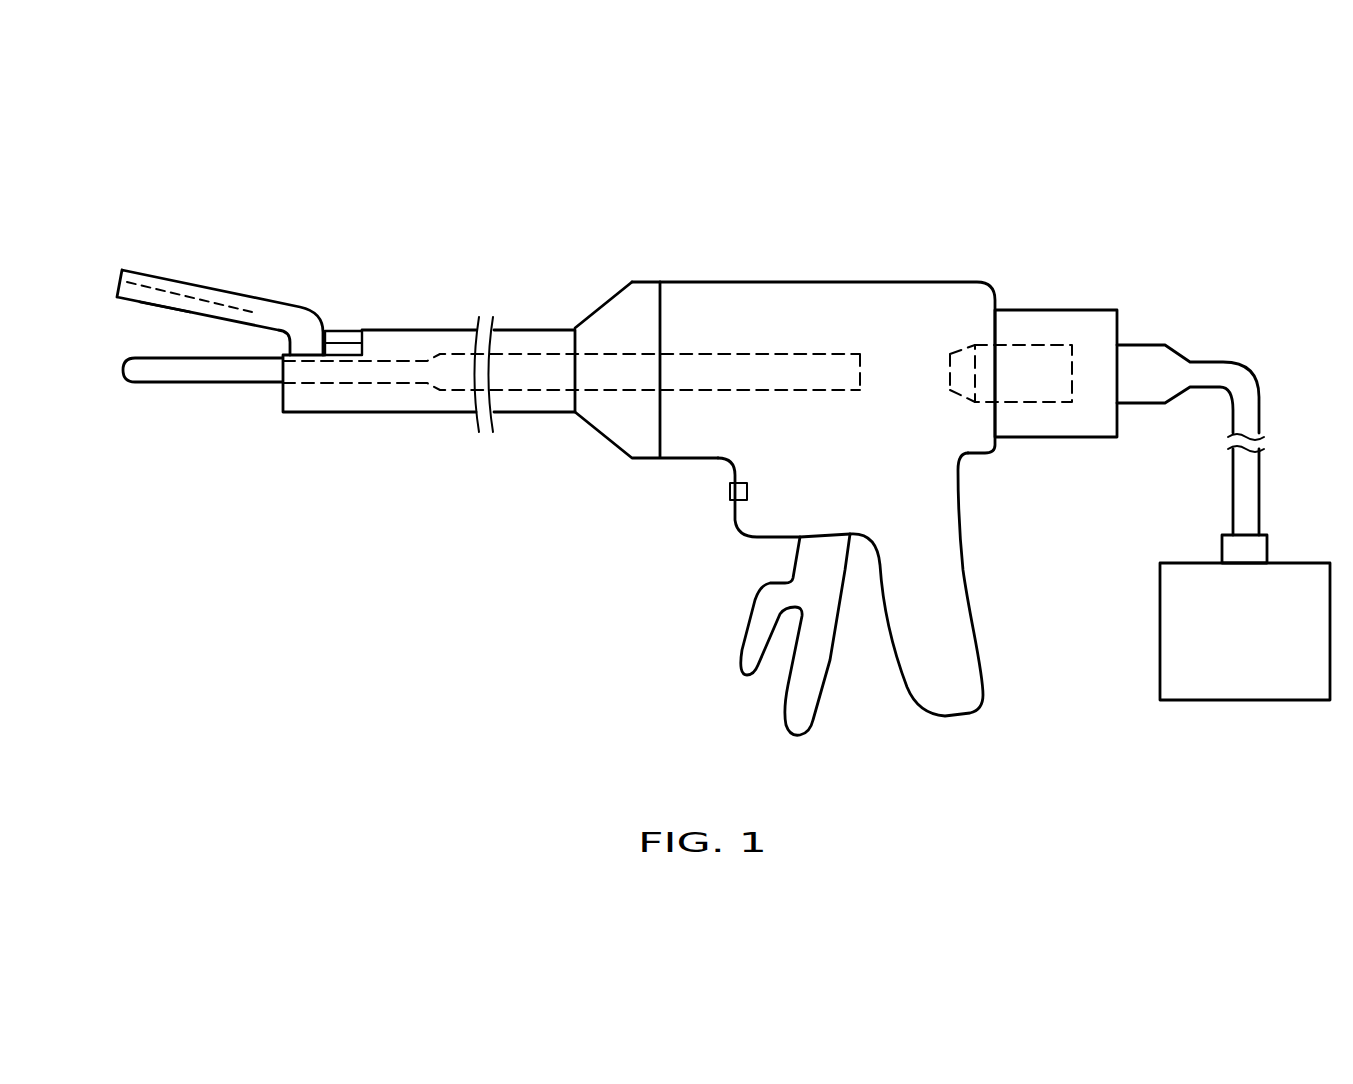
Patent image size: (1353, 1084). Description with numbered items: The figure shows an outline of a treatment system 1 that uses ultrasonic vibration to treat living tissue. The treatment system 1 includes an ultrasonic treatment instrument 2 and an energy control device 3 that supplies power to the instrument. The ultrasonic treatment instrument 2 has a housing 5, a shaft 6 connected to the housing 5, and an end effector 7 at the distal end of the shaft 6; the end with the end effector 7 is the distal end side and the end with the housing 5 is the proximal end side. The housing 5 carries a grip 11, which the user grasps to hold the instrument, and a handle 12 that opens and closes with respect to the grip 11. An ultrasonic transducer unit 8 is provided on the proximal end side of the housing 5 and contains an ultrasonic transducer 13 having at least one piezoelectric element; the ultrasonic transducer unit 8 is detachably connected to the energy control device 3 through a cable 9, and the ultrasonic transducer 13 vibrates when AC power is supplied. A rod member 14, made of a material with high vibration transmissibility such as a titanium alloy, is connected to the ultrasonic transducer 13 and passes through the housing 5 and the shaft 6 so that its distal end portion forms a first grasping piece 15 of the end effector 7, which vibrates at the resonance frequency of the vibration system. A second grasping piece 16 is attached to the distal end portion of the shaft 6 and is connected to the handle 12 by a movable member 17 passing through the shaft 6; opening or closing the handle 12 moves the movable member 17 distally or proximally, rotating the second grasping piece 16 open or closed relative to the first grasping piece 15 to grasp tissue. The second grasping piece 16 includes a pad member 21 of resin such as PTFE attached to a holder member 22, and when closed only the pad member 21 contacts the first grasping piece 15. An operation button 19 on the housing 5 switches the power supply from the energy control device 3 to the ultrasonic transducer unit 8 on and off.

The treatment system 1 is at (1022, 175).
The ultrasonic treatment instrument 2 is at (656, 266).
The energy control device 3 is at (1317, 563).
The housing 5 is at (898, 278).
The shaft 6 is at (530, 328).
The end effector 7 is at (90, 283).
The ultrasonic transducer unit 8 is at (1025, 305).
The cable 9 is at (1152, 358).
The grip 11 is at (962, 575).
The handle 12 is at (818, 690).
The ultrasonic transducer 13 is at (1057, 405).
The rod member 14 is at (605, 370).
The first grasping piece 15 is at (200, 375).
The second grasping piece 16 is at (221, 286).
The movable member 17 is at (342, 337).
The operation button 19 is at (730, 490).
The pad member 21 is at (162, 313).
The holder member 22 is at (160, 283).